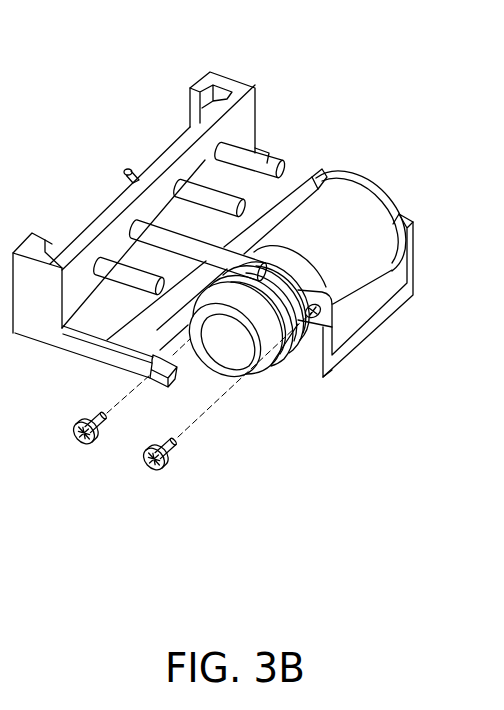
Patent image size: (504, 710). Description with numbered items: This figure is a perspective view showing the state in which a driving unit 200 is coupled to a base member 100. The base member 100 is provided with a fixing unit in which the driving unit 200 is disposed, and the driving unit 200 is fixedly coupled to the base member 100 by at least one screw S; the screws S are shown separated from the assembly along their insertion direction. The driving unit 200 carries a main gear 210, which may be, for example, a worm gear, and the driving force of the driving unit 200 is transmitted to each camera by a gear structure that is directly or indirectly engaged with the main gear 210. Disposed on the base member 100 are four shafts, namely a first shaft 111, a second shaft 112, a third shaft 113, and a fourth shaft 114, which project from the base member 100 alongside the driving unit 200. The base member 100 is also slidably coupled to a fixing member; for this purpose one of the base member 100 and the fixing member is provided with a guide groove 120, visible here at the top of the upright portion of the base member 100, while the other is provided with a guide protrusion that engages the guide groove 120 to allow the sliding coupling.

The base member 100 is at (173, 198).
The first shaft 111 is at (138, 222).
The second shaft 112 is at (108, 262).
The third shaft 113 is at (202, 190).
The fourth shaft 114 is at (265, 157).
The guide groove 120 is at (223, 92).
The driving unit 200 is at (327, 309).
The main gear 210 is at (280, 347).
The screw S is at (142, 465).